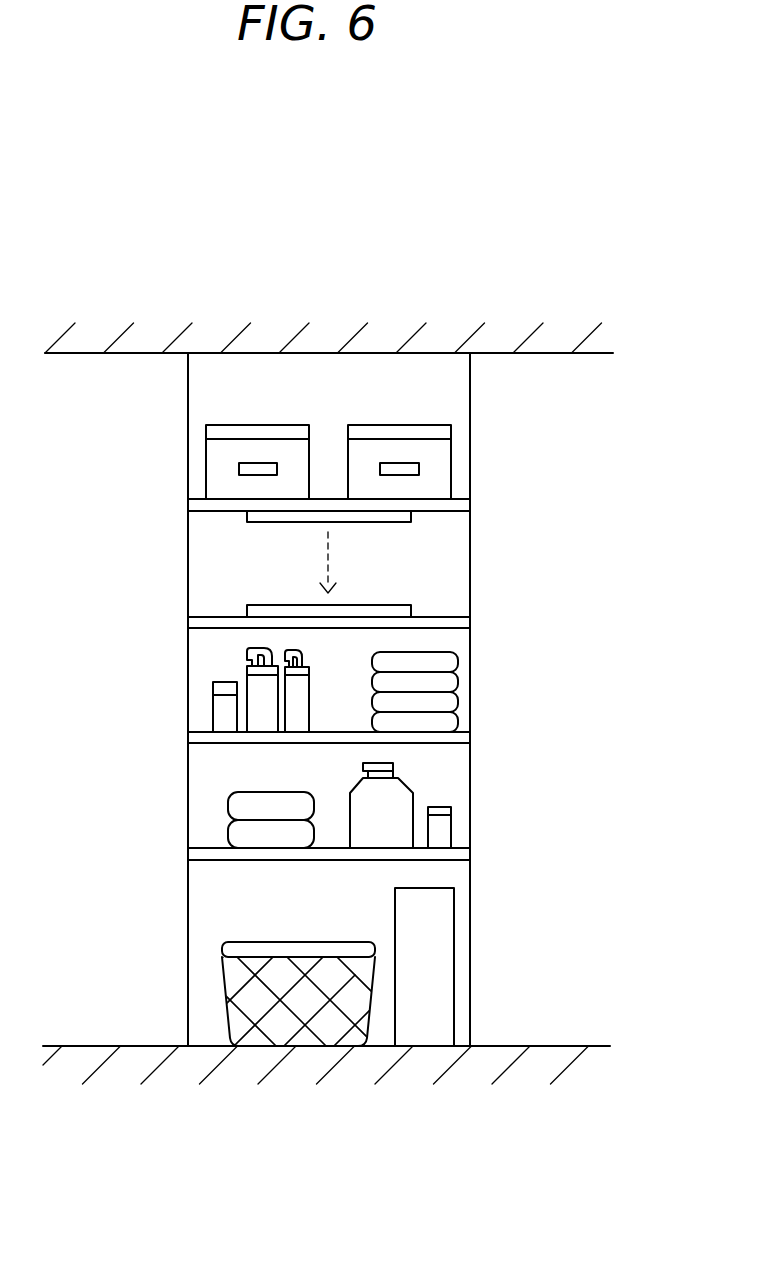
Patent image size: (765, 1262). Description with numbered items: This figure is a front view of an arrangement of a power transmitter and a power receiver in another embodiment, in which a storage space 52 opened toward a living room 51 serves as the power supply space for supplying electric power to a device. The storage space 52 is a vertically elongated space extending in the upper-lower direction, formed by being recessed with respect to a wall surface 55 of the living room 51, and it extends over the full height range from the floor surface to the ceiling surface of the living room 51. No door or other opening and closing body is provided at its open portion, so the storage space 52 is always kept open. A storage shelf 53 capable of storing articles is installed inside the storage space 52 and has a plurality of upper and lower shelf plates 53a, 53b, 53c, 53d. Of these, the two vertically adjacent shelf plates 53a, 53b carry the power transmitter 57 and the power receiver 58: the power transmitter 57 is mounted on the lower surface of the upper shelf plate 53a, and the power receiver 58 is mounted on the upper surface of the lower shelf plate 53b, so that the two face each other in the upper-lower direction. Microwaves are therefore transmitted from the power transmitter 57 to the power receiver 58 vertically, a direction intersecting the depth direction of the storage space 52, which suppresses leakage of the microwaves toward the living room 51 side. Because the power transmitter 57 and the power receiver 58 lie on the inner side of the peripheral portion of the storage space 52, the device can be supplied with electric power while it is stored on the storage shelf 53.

The living room 51 is at (66, 732).
The storage space 52 is at (325, 906).
The storage shelf 53 is at (327, 679).
The upper shelf plate 53a is at (224, 505).
The lower shelf plate 53b is at (225, 622).
The shelf plate 53c is at (203, 740).
The shelf plate 53d is at (210, 860).
The wall surface 55 is at (143, 1033).
The power transmitter 57 is at (390, 517).
The power receiver 58 is at (387, 610).